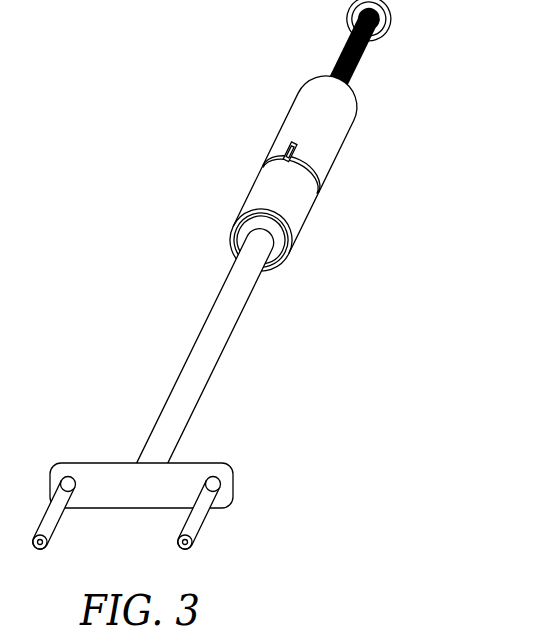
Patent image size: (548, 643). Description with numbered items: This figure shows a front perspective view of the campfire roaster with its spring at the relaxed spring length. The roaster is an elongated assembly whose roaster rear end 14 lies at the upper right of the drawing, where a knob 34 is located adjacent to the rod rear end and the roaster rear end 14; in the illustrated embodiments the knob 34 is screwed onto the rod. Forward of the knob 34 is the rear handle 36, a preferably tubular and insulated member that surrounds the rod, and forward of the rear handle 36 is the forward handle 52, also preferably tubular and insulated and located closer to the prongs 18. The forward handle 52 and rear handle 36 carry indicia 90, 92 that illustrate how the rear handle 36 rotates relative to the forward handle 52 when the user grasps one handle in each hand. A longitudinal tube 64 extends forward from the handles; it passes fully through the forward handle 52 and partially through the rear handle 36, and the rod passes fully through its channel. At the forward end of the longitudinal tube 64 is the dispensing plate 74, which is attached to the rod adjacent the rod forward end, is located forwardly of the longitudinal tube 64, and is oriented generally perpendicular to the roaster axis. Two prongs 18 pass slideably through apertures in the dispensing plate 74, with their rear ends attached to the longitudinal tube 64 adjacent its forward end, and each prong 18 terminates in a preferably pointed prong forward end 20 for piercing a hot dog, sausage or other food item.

The roaster rear end 14 is at (409, 46).
The knob 34 is at (394, 14).
The rear handle 36 is at (332, 138).
The forward handle 52 is at (303, 207).
The indicia 90 is at (282, 142).
The indicia 92 is at (273, 168).
The longitudinal tube 64 is at (234, 312).
The dispensing plate 74 is at (160, 498).
The prong 18 is at (157, 515).
The prong forward end 20 is at (192, 545).